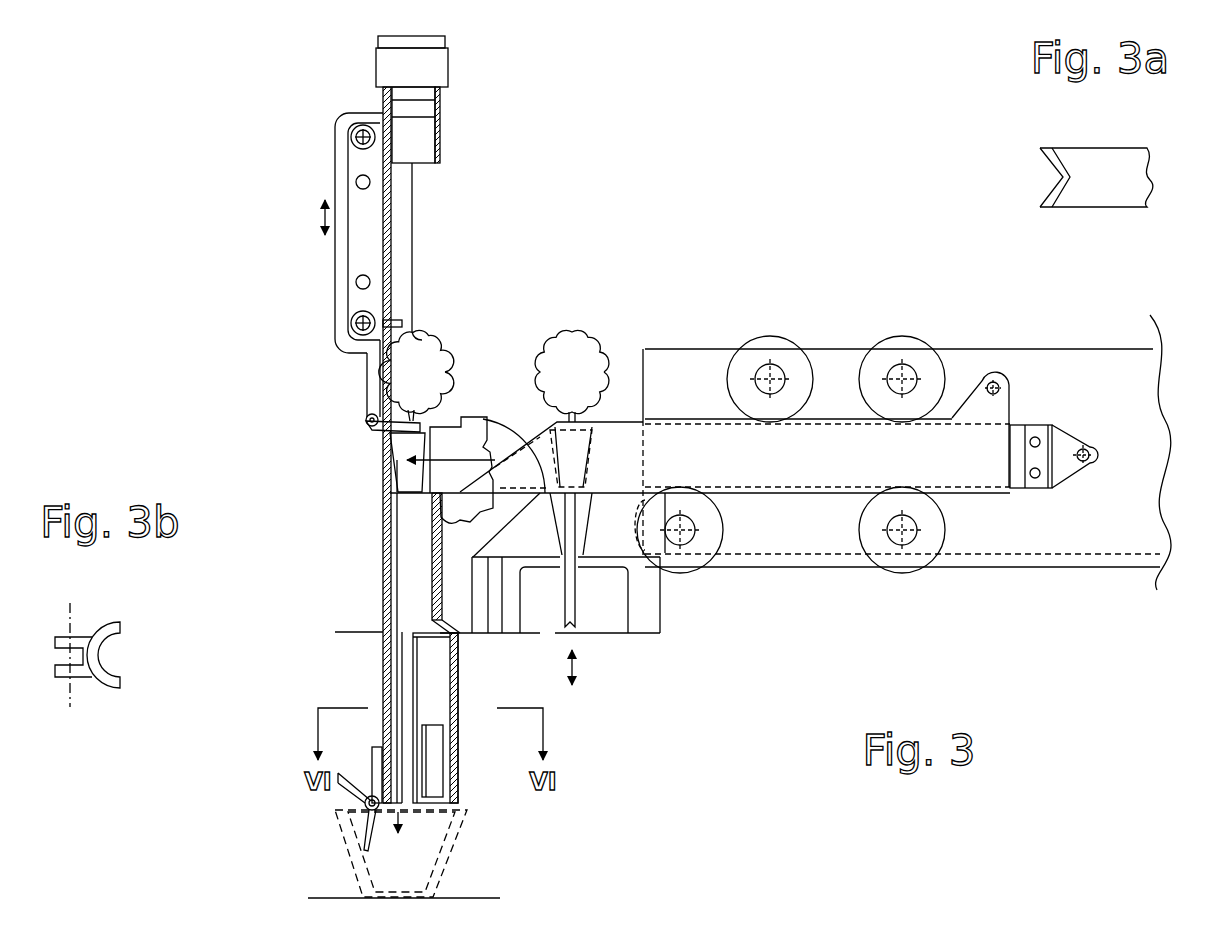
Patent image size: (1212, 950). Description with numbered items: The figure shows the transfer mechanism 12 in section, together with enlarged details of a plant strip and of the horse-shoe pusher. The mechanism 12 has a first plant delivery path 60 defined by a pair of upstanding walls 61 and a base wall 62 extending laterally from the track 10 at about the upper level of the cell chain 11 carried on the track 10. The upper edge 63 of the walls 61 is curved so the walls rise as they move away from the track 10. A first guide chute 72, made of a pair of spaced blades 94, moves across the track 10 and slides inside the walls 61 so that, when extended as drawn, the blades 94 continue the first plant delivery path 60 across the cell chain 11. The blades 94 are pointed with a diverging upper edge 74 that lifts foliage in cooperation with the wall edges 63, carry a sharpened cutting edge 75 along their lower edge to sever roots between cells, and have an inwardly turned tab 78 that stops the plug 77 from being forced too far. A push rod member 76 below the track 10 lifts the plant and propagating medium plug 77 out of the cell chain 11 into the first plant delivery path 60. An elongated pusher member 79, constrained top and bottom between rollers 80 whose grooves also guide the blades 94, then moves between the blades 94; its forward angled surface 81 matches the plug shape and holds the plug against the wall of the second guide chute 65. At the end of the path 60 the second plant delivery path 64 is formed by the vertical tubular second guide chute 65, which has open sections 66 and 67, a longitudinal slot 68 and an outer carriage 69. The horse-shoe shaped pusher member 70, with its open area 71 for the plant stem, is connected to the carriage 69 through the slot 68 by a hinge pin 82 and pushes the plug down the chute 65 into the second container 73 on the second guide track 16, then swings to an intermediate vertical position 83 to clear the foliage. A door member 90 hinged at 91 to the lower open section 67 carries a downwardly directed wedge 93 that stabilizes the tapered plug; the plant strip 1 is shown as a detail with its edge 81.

In FIG. 3A, the strip 1 is at (1093, 167).
In FIG. 3, the track 10 is at (592, 550).
In FIG. 3, the cell chain 11 is at (555, 495).
In FIG. 3, the transfer mechanism 12 is at (748, 262).
In FIG. 3, the second guide track 16 is at (325, 897).
In FIG. 3, the first plant delivery path 60 is at (485, 462).
In FIG. 3, the upstanding walls 61 is at (508, 445).
In FIG. 3, the base wall 62 is at (472, 500).
In FIG. 3, the upper edge 63 is at (488, 417).
In FIG. 3, the second plant delivery path 64 is at (394, 563).
In FIG. 3, the second guide chute 65 is at (438, 132).
In FIG. 3, the open section 66 is at (427, 293).
In FIG. 3, the lower open section 67 is at (434, 702).
In FIG. 3, the longitudinal slot 68 is at (383, 443).
In FIG. 3, the carriage 69 is at (383, 326).
In FIG. 3, the pusher member 70 is at (378, 432).
In FIG. 3B, the pusher member 70 is at (83, 633).
In FIG. 3, the open area 71 is at (397, 480).
In FIG. 3B, the open area 71 is at (103, 660).
In FIG. 3, the first guide chute 72 is at (637, 373).
In FIG. 3, the second container 73 is at (352, 860).
In FIG. 3, the diverging upper edge 74 is at (543, 427).
In FIG. 3, the sharpened cutting edge 75 is at (555, 497).
In FIG. 3, the push rod member 76 is at (577, 620).
In FIG. 3, the plant and propagating medium plug 77 is at (587, 462).
In FIG. 3, the inwardly turned tab 78 is at (588, 423).
In FIG. 3, the pusher member 79 is at (432, 478).
In FIG. 3, the rollers 80 is at (770, 342).
In FIG. 3, the angled surface 81 is at (393, 505).
In FIG. 3A, the angled surface 81 is at (1052, 179).
In FIG. 3, the hinge pin 82 is at (366, 417).
In FIG. 3, the intermediate vertical position 83 is at (379, 839).
In FIG. 3, the door member 90 is at (456, 765).
In FIG. 3, the hinge 91 is at (417, 780).
In FIG. 3, the wedge 93 is at (437, 793).
In FIG. 3, the blades 94 is at (707, 437).